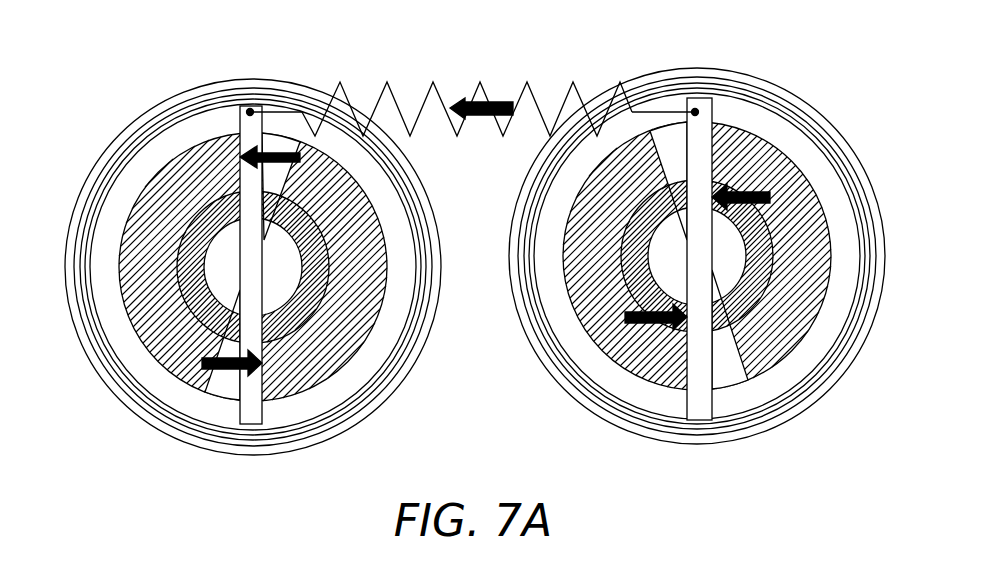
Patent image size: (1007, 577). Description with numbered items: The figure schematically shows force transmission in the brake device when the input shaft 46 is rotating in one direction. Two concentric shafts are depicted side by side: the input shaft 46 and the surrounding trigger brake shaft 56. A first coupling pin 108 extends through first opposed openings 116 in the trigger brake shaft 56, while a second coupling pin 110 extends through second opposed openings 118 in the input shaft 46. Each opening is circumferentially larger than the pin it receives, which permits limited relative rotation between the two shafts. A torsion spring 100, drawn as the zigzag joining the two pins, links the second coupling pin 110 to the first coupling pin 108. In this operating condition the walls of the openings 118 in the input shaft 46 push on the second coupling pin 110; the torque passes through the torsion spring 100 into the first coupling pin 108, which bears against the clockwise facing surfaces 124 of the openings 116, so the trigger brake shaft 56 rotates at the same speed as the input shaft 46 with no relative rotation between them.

The input shaft 46 is at (178, 263).
The trigger brake shaft 56 is at (160, 200).
The torsion spring 100 is at (527, 82).
The first coupling pin 108 is at (250, 420).
The second coupling pin 110 is at (698, 408).
The first opposed openings 116 is at (282, 143).
The second opposed openings 118 is at (718, 327).
The clockwise facing surfaces 124 is at (237, 153).